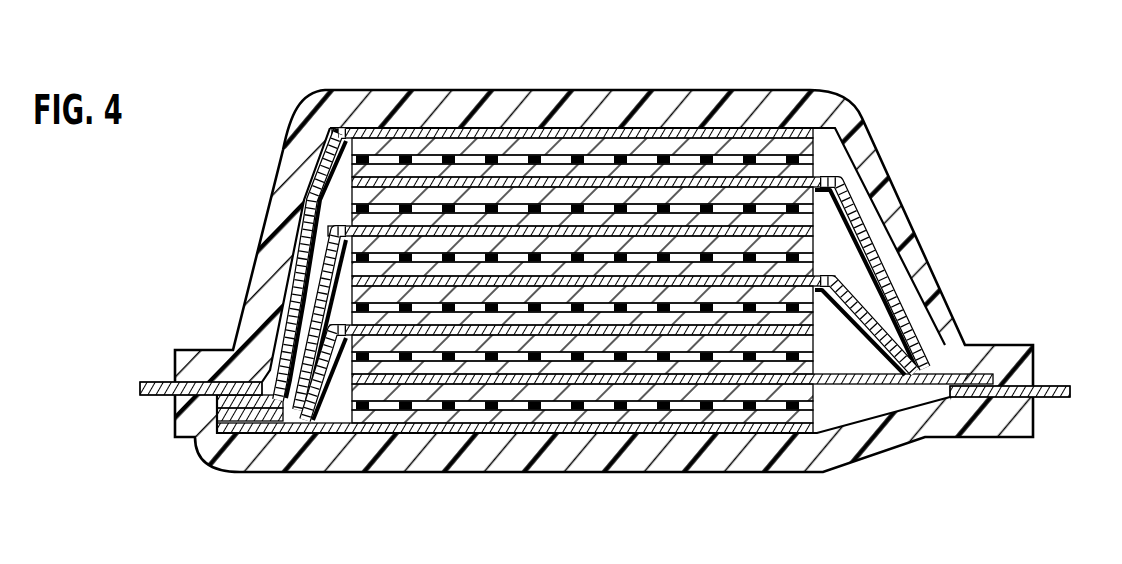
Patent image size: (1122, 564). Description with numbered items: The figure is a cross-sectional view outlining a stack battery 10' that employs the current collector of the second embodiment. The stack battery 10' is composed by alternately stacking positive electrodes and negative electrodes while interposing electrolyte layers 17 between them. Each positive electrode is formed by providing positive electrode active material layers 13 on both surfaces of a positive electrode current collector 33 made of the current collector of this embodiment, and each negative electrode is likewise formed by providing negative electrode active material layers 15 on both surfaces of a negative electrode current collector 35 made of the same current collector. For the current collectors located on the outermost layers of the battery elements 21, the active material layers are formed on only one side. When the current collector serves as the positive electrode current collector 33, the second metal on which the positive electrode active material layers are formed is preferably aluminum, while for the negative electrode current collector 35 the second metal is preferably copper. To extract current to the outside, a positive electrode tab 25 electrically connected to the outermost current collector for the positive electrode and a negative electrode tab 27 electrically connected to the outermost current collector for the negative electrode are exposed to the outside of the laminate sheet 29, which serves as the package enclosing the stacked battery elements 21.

The stack battery 10' is at (604, 244).
The positive electrode active material layer 13 is at (440, 145).
The negative electrode active material layer 15 is at (578, 150).
The electrolyte layer 17 is at (500, 150).
The battery element 21 is at (828, 349).
The positive electrode tab 25 is at (152, 382).
The negative electrode tab 27 is at (1044, 386).
The laminate sheet 29 is at (1005, 345).
The positive electrode current collector 33 is at (683, 135).
The negative electrode current collector 35 is at (912, 397).